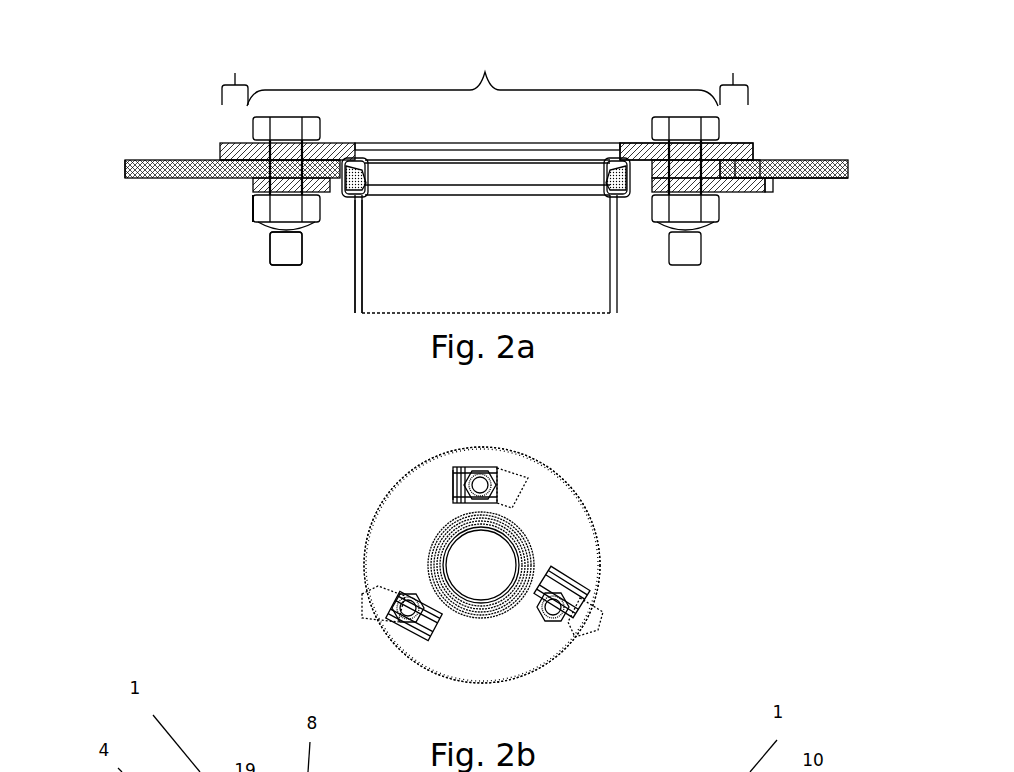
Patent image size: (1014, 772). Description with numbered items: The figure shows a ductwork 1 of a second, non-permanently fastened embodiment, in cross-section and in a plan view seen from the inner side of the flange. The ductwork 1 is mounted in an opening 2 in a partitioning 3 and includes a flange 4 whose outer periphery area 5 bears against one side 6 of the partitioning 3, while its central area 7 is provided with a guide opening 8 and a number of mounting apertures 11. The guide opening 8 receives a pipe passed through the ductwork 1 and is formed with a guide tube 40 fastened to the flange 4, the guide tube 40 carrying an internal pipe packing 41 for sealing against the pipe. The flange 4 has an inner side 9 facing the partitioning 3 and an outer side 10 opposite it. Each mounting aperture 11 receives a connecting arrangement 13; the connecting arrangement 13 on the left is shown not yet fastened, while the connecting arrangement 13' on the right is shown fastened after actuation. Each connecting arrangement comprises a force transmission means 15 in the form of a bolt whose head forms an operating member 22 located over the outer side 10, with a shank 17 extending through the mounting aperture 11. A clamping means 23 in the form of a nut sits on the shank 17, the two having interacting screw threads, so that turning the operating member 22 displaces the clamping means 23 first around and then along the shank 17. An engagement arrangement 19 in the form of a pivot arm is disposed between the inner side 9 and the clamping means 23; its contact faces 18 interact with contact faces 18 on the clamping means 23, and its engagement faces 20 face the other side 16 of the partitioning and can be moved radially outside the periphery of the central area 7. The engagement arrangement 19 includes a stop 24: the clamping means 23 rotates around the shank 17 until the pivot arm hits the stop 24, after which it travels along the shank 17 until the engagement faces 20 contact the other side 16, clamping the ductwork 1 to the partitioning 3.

In FIG. 2a, the ductwork 1 is at (665, 297).
In FIG. 2b, the ductwork 1 is at (345, 487).
In FIG. 2a, the opening 2 is at (420, 273).
In FIG. 2a, the partitioning 3 is at (122, 172).
In FIG. 2a, the flange 4 is at (220, 140).
In FIG. 2b, the flange 4 is at (385, 462).
In FIG. 2a, the outer periphery area 5 is at (485, 74).
In FIG. 2a, the one side of the partitioning 6 is at (815, 158).
In FIG. 2a, the central area 7 is at (482, 75).
In FIG. 2a, the guide opening 8 is at (533, 270).
In FIG. 2b, the guide opening 8 is at (500, 545).
In FIG. 2a, the inner side 9 is at (225, 163).
In FIG. 2b, the inner side 9 is at (535, 657).
In FIG. 2a, the outer side 10 is at (740, 143).
In FIG. 2a, the mounting aperture 11 is at (263, 205).
In FIG. 2a, the connecting arrangement 13 is at (244, 247).
In FIG. 2b, the connecting arrangement 13 is at (386, 514).
In FIG. 2a, the connecting arrangement 13' is at (744, 239).
In FIG. 2b, the connecting arrangement 13' is at (597, 616).
In FIG. 2a, the force transmission means 15 is at (504, 290).
In FIG. 2a, the shank 17 is at (277, 250).
In FIG. 2a, the other side of the partitioning 16 is at (835, 180).
In FIG. 2a, the contact faces 18 is at (643, 170).
In FIG. 2a, the engagement arrangement 19 is at (323, 212).
In FIG. 2b, the engagement arrangement 19 is at (527, 470).
In FIG. 2a, the engagement faces 20 is at (760, 175).
In FIG. 2a, the operating member 22 is at (270, 124).
In FIG. 2a, the clamping means 23 is at (267, 208).
In FIG. 2b, the clamping means 23 is at (453, 495).
In FIG. 2b, the stop 24 is at (450, 468).
In FIG. 2a, the guide tube 40 is at (360, 270).
In FIG. 2a, the pipe packing 41 is at (612, 312).